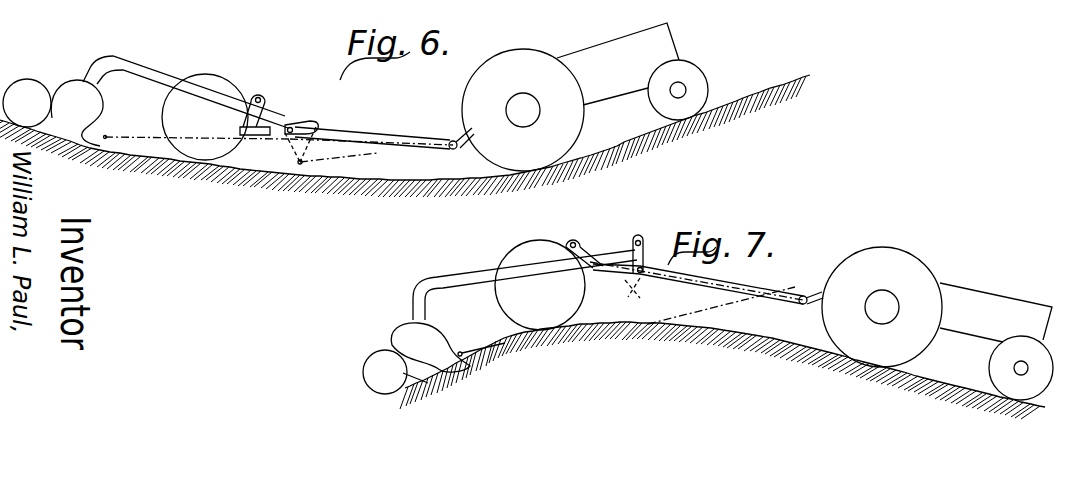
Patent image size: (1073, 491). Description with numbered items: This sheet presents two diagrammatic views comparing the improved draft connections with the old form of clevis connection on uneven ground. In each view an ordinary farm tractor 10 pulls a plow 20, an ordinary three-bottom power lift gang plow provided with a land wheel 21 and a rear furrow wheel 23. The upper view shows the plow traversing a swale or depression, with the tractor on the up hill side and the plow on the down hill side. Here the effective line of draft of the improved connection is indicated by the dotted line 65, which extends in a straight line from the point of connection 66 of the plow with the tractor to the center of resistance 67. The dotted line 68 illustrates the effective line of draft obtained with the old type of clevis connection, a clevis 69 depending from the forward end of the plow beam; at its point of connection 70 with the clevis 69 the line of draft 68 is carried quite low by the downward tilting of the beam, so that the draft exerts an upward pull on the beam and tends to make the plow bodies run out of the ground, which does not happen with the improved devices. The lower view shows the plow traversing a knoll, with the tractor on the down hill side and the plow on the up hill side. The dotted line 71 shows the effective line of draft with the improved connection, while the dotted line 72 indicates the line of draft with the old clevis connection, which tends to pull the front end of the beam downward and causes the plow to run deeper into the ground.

In FIG. 6, the farm tractor 10 is at (583, 43).
In FIG. 7, the farm tractor 10 is at (993, 271).
In FIG. 6, the plow 20 is at (172, 70).
In FIG. 7, the plow 20 is at (405, 298).
In FIG. 6, the land wheel 21 is at (234, 73).
In FIG. 7, the land wheel 21 is at (505, 260).
In FIG. 6, the rear furrow wheel 23 is at (40, 86).
In FIG. 7, the rear furrow wheel 23 is at (363, 365).
In FIG. 6, the dotted line of draft 65 is at (253, 136).
In FIG. 6, the point of connection 66 is at (452, 141).
In FIG. 7, the point of connection 66 is at (804, 296).
In FIG. 6, the center of resistance 67 is at (106, 136).
In FIG. 6, the dotted line of draft 68 is at (370, 153).
In FIG. 6, the clevis 69 is at (345, 131).
In FIG. 7, the clevis 69 is at (630, 280).
In FIG. 6, the point of connection 70 is at (306, 162).
In FIG. 7, the point of connection 70 is at (634, 294).
In FIG. 7, the dotted line of draft 71 is at (712, 308).
In FIG. 7, the dotted line of draft 72 is at (655, 284).